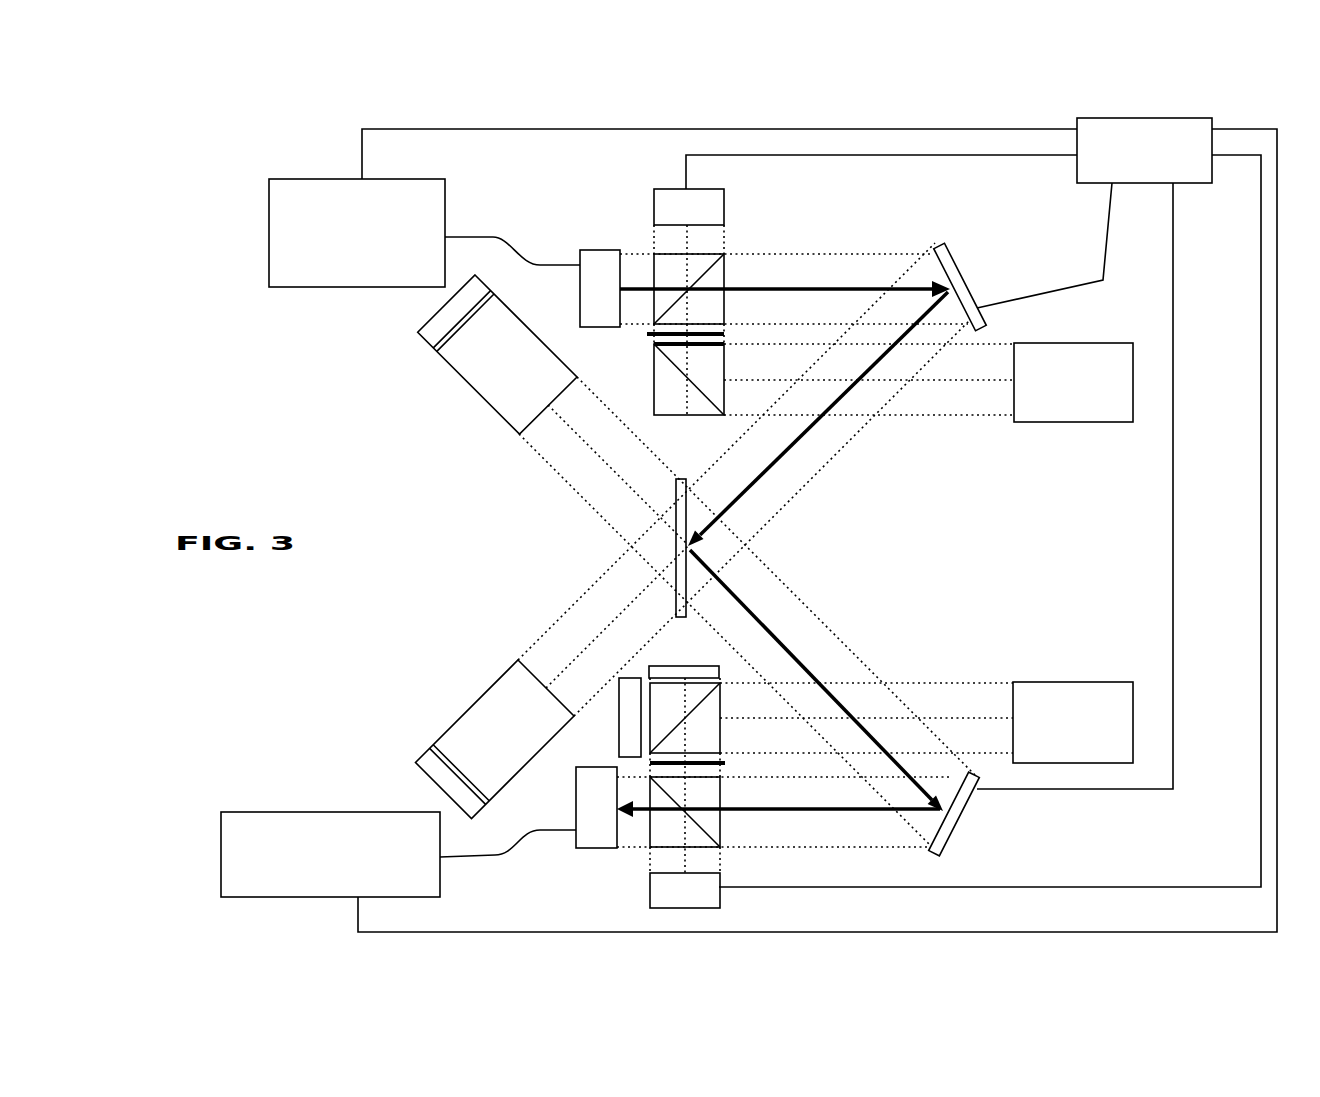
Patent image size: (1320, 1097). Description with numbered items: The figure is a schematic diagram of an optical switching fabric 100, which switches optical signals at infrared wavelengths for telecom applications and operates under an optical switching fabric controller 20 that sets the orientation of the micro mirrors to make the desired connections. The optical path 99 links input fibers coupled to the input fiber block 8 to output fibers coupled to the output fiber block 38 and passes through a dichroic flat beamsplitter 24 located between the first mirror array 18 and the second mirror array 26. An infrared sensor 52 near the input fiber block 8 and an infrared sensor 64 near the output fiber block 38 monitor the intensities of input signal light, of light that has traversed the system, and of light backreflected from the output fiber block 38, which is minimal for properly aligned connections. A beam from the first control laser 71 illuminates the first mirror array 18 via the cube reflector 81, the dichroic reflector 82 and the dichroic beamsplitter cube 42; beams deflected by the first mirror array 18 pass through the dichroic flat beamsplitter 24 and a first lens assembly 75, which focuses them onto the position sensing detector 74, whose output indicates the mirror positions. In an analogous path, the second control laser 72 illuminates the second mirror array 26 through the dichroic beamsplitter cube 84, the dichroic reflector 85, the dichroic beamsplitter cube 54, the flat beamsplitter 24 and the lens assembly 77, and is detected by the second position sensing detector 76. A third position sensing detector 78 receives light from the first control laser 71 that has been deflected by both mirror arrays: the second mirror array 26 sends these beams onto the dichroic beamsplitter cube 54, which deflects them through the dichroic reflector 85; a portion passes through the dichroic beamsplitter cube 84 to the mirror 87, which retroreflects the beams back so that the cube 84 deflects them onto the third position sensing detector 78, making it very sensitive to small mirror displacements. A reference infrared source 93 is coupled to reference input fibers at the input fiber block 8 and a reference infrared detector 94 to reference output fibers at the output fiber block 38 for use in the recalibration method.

The optical switching fabric 100 is at (238, 143).
The optical switching fabric controller 20 is at (1193, 117).
The reference infrared source 93 is at (357, 233).
The input fiber block 8 is at (582, 252).
The infrared sensor 52 is at (724, 203).
The dichroic beamsplitter cube 42 is at (850, 275).
The first mirror array 18 is at (1015, 286).
The first control laser 71 is at (1090, 407).
The lens assembly 77 is at (452, 372).
The second position sensing detector 76 is at (437, 307).
The dichroic reflector 82 is at (727, 334).
The cube reflector 81 is at (653, 388).
The optical path 99 is at (763, 483).
The dichroic flat beamsplitter 24 is at (693, 557).
The mirror 87 is at (667, 665).
The third position sensing detector 78 is at (630, 677).
The dichroic beamsplitter cube 84 is at (721, 725).
The dichroic reflector 85 is at (726, 763).
The dichroic beamsplitter cube 54 is at (719, 823).
The infrared sensor 64 is at (719, 893).
The output fiber block 38 is at (592, 767).
The first lens assembly 75 is at (455, 710).
The position sensing detector 74 is at (423, 770).
The second control laser 72 is at (1090, 747).
The second mirror array 26 is at (962, 814).
The reference infrared detector 94 is at (350, 896).